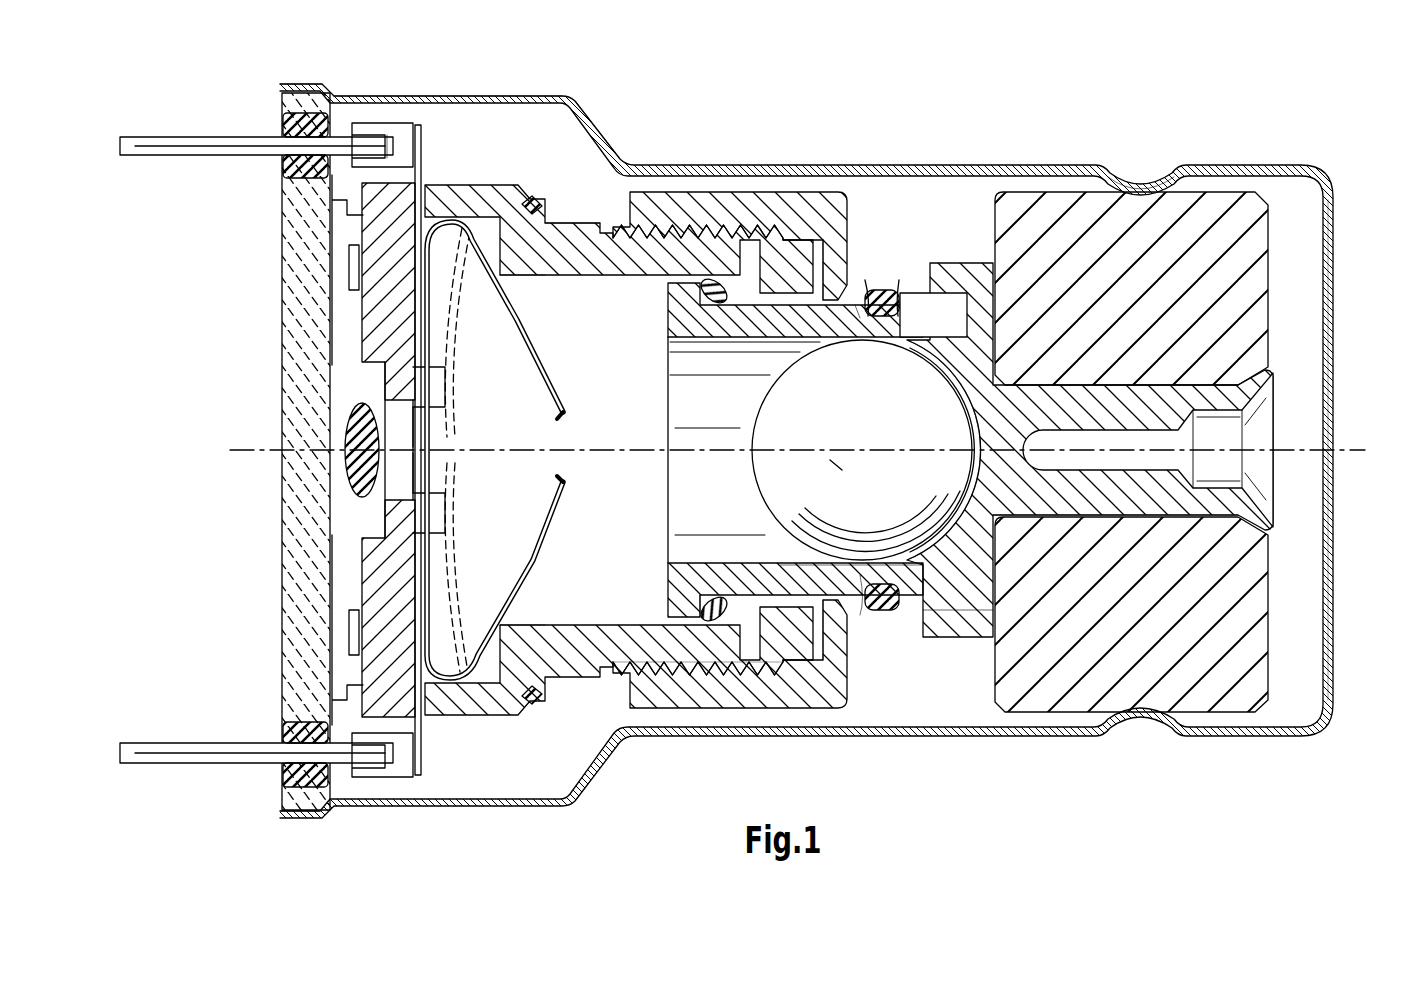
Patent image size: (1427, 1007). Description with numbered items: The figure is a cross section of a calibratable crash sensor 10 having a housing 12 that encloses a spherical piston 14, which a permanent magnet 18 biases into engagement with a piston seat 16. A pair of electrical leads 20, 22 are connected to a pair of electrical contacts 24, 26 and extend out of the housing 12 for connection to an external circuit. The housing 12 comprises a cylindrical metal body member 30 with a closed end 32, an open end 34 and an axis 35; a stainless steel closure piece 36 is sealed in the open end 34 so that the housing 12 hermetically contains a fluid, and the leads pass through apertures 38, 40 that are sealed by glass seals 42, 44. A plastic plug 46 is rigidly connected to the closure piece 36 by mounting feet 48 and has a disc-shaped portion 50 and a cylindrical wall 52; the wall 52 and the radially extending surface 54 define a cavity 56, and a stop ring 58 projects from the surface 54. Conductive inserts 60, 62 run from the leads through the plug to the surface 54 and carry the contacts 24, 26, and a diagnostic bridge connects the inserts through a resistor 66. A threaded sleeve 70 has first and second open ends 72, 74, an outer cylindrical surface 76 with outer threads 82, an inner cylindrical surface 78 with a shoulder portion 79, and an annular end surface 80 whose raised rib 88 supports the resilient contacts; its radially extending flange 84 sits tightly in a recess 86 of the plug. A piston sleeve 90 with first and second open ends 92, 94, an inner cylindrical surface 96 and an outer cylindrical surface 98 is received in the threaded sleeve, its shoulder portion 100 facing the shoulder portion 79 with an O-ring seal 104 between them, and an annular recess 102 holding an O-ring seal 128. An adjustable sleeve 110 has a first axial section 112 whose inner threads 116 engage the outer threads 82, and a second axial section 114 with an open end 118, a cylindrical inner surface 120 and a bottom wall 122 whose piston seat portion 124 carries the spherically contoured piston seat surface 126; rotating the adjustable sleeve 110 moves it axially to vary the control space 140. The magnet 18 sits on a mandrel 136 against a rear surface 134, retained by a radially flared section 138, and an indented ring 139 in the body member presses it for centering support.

The calibratable crash sensor 10 is at (355, 70).
The housing 12 is at (497, 94).
The spherical piston 14 is at (805, 413).
The piston seat 16 is at (935, 365).
The permanent magnet 18 is at (1215, 215).
The electrical lead 20 is at (145, 140).
The electrical lead 22 is at (147, 746).
The electrical contact 24 is at (577, 385).
The electrical contact 26 is at (575, 490).
The cylindrical metal body member 30 is at (540, 95).
The closed end 32 is at (1338, 215).
The open end 34 is at (266, 98).
The axis 35 is at (250, 448).
The closure piece 36 is at (282, 283).
The aperture 38 is at (285, 126).
The aperture 40 is at (283, 732).
The glass seal 42 is at (285, 170).
The glass seal 44 is at (283, 783).
The plastic plug 46 is at (374, 385).
The mounting feet 48 is at (345, 265).
The disc-shaped portion 50 is at (360, 330).
The cylindrical wall 52 is at (419, 185).
The radially extending surface 54 is at (452, 345).
The cavity 56 is at (492, 236).
The stop ring 58 is at (447, 400).
The conductive insert 60 is at (420, 128).
The conductive insert 62 is at (425, 795).
The resistor 66 is at (357, 470).
The threaded sleeve 70 is at (632, 164).
The first open end 72 is at (460, 320).
The second open end 74 is at (745, 306).
The outer cylindrical surface 76 is at (556, 226).
The inner cylindrical surface 78 is at (600, 280).
The shoulder portion 79 is at (688, 606).
The annular end surface 80 is at (510, 665).
The outer threads 82 is at (630, 178).
The radially extending flange 84 is at (530, 195).
The recess 86 is at (535, 242).
The raised rib 88 is at (492, 682).
The piston sleeve 90 is at (822, 300).
The first open end 92 is at (665, 335).
The second open end 94 is at (990, 300).
The inner cylindrical surface 96 is at (700, 340).
The outer cylindrical surface 98 is at (864, 300).
The shoulder portion 100 is at (722, 607).
The annular recess 102 is at (905, 298).
The O-ring seal 104 is at (672, 568).
The adjustable sleeve 110 is at (681, 710).
The first axial section 112 is at (738, 692).
The second axial section 114 is at (900, 627).
The inner threads 116 is at (803, 662).
The open end 118 is at (790, 560).
The cylindrical inner surface 120 is at (876, 612).
The bottom wall 122 is at (962, 592).
The piston seat portion 124 is at (945, 565).
The piston seat surface 126 is at (925, 462).
The O-ring seal 128 is at (887, 300).
The rear surface 134 is at (1000, 620).
The mandrel 136 is at (1235, 520).
The radially flared section 138 is at (1265, 505).
The indented ring 139 is at (1134, 170).
The control space 140 is at (932, 335).